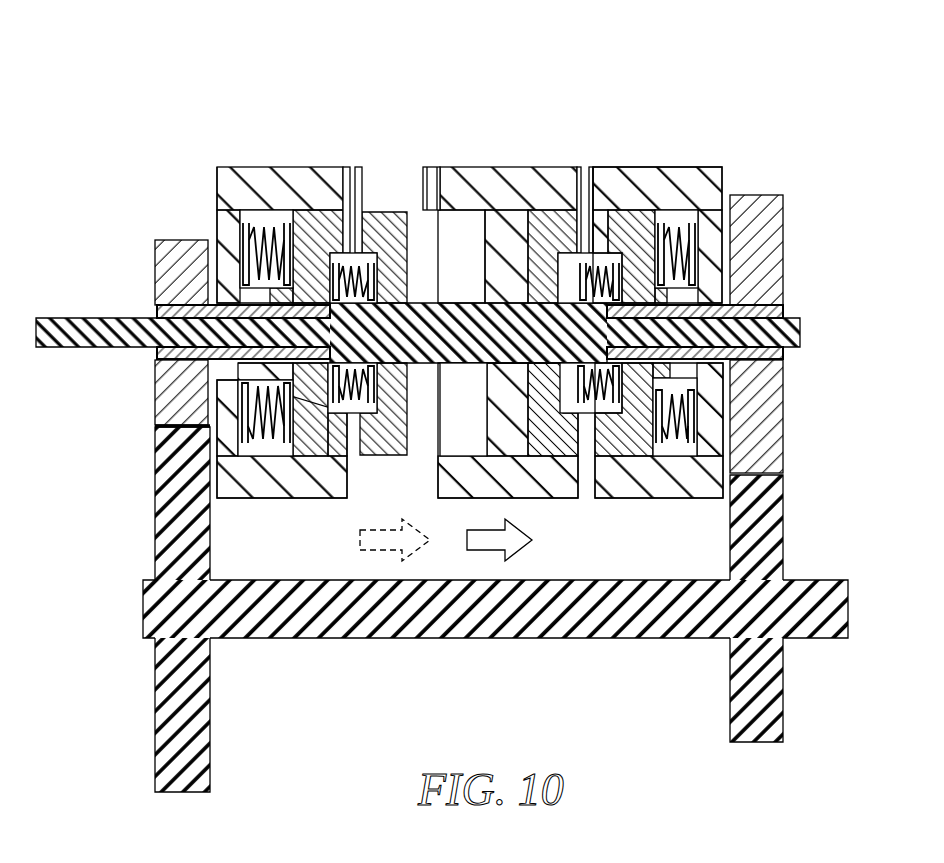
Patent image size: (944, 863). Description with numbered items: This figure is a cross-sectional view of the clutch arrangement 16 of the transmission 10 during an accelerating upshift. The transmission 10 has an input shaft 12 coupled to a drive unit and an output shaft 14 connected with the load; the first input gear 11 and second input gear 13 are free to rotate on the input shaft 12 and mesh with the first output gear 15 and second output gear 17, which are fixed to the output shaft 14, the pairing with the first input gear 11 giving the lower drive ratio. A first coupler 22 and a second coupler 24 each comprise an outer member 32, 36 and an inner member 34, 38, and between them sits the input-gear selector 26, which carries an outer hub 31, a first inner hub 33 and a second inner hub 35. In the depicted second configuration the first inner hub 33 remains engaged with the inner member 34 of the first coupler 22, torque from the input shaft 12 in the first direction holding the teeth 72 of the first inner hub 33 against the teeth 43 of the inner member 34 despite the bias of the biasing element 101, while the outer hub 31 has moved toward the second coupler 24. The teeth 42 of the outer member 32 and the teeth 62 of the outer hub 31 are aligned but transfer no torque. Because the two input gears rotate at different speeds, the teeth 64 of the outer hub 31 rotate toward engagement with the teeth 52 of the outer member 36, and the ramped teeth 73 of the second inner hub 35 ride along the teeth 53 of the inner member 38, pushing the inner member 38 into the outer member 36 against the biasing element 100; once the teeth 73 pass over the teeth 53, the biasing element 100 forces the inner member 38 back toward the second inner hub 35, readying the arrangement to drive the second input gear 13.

The transmission 10 is at (147, 88).
The first input gear 11 is at (176, 226).
The input shaft 12 is at (94, 305).
The second input gear 13 is at (795, 230).
The output shaft 14 is at (828, 572).
The first output gear 15 is at (148, 463).
The clutch arrangement 16 is at (253, 108).
The second output gear 17 is at (790, 512).
The first coupler 22 is at (243, 156).
The second coupler 24 is at (690, 157).
The input-gear selector 26 is at (473, 157).
The outer hub 31 is at (445, 160).
The outer member 32 is at (210, 182).
The first inner hub 33 is at (394, 210).
The inner member 34 is at (284, 222).
The second inner hub 35 is at (525, 193).
The outer member 36 is at (713, 160).
The inner member 38 is at (634, 200).
The teeth 42 is at (342, 187).
The teeth 43 is at (341, 237).
The teeth 52 is at (583, 160).
The teeth 53 is at (600, 224).
The teeth 62 is at (427, 160).
The teeth 64 is at (569, 188).
The teeth 72 is at (366, 226).
The teeth 73 is at (556, 224).
The biasing element 100 is at (677, 452).
The biasing element 101 is at (353, 417).